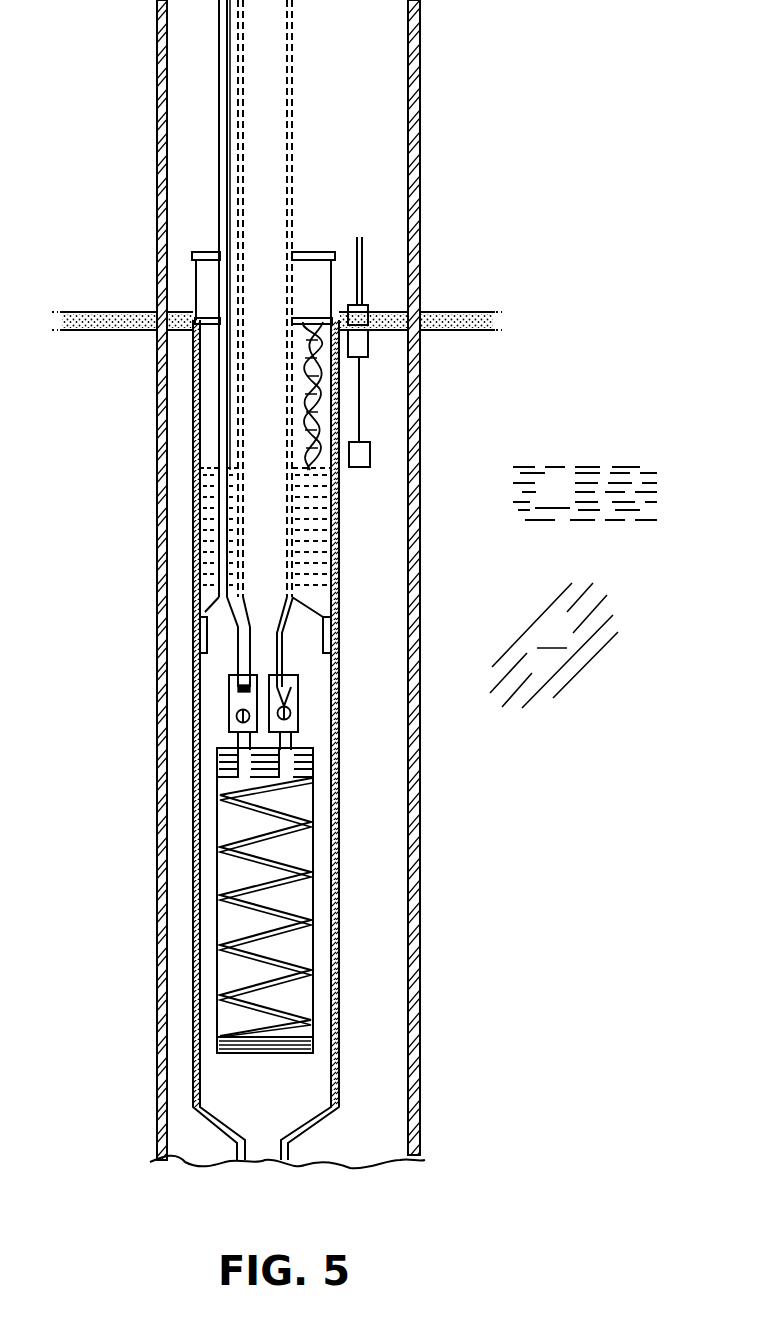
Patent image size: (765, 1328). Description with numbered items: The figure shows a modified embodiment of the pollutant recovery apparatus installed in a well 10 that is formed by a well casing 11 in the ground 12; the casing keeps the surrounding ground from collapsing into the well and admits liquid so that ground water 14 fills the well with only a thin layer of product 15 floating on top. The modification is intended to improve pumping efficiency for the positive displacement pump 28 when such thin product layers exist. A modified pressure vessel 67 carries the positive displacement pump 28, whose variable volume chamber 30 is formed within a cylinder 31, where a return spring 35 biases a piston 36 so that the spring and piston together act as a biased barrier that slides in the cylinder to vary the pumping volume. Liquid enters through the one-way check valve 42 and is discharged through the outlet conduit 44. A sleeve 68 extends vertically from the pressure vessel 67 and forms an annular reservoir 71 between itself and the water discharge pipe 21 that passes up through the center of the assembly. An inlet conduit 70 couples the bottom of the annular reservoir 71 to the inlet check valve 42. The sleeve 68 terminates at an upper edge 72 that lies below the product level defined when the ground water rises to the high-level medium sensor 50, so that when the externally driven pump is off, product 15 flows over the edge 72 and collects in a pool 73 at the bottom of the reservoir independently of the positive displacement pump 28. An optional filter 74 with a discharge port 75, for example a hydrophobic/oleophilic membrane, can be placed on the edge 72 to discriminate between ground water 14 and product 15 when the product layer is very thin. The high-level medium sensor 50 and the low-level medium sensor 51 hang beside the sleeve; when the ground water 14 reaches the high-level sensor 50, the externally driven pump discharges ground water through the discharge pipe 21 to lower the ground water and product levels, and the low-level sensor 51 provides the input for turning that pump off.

The well 10 is at (354, 584).
The well casing 11 is at (413, 113).
The ground 12 is at (554, 645).
The ground water 14 is at (585, 493).
The product 15 is at (468, 322).
The discharge pipe 21 is at (292, 79).
The positive displacement pump 28 is at (306, 883).
The variable volume chamber 30 is at (292, 843).
The cylinder 31 is at (313, 903).
The return spring 35 is at (288, 964).
The piston 36 is at (300, 1037).
The one-way check valve 42 is at (298, 710).
The outlet conduit 44 is at (229, 710).
The high-level medium sensor 50 is at (363, 348).
The low-level medium sensor 51 is at (370, 458).
The modified pressure vessel 67 is at (340, 740).
The sleeve 68 is at (340, 536).
The inlet conduit 70 is at (310, 600).
The annular reservoir 71 is at (207, 418).
The upper edge 72 is at (193, 317).
The pool 73 is at (193, 502).
The filter 74 is at (328, 283).
The discharge port 75 is at (313, 322).